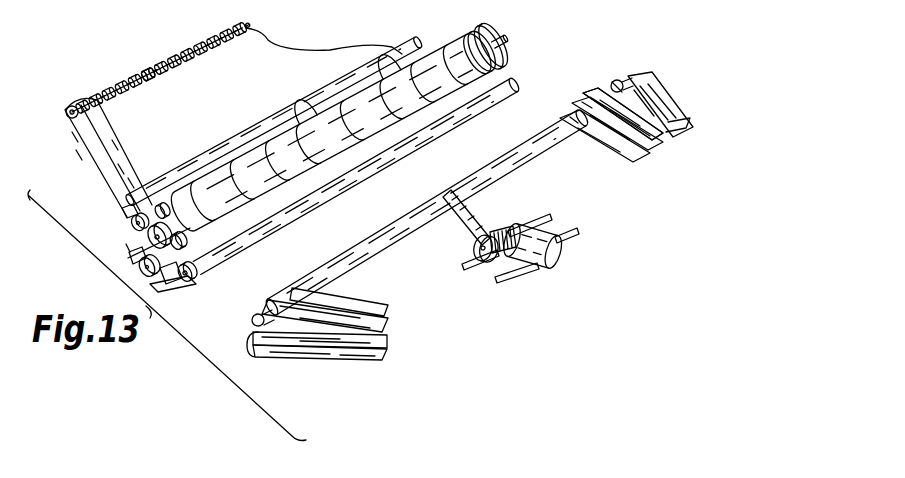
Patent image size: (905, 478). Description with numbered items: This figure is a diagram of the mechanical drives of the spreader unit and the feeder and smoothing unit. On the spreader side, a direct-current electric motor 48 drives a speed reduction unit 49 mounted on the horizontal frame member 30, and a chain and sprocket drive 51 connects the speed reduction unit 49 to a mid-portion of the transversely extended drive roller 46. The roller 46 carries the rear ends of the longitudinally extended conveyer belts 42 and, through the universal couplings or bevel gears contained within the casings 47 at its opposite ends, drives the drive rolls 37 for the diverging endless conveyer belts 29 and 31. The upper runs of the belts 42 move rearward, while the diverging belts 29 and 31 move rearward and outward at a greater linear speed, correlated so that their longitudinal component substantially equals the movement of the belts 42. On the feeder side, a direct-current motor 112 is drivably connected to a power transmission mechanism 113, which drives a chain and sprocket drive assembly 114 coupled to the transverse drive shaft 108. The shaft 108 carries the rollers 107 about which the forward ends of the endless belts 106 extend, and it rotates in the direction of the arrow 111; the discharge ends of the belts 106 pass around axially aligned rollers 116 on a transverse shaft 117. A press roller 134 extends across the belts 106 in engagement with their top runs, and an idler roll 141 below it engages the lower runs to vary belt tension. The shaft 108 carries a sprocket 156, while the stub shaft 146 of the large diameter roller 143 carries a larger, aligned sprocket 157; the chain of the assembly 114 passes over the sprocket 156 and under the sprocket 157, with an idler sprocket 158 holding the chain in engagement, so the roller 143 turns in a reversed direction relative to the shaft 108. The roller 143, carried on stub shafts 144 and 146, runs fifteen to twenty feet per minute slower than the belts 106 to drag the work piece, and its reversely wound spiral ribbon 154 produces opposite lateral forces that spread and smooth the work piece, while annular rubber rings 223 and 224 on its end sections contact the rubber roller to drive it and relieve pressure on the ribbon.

The endless conveyer belt 29 is at (322, 352).
The horizontal frame member 30 is at (574, 232).
The endless conveyer belt 31 is at (687, 121).
The drive roll 37 is at (653, 82).
The longitudinally extended conveyer belt 42 is at (617, 138).
The drive roller 46 is at (380, 254).
The casing 47 is at (617, 80).
The D.C. electric motor 48 is at (556, 258).
The speed reduction unit 49 is at (490, 272).
The chain and sprocket drive 51 is at (468, 211).
The endless belt 106 is at (123, 135).
The roller 107 is at (230, 260).
The transverse shaft 108 is at (190, 282).
The arrow 111 is at (273, 200).
The D.C. electric motor 112 is at (128, 253).
The power transmission mechanism 113 is at (150, 280).
The chain and sprocket drive assembly 114 is at (170, 283).
The roller 116 is at (121, 80).
The transverse shaft 117 is at (143, 73).
The press roller 134 is at (231, 144).
The idler roll 141 is at (126, 212).
The large diameter roller 143 is at (450, 46).
The stub shaft 144 is at (192, 231).
The stub shaft 146 is at (502, 36).
The spiral ribbon 154 is at (363, 77).
The sprocket 156 is at (182, 290).
The sprocket 157 is at (144, 238).
The idler sprocket 158 is at (131, 222).
The annular rubber ring 223 is at (161, 204).
The annular rubber ring 224 is at (476, 34).